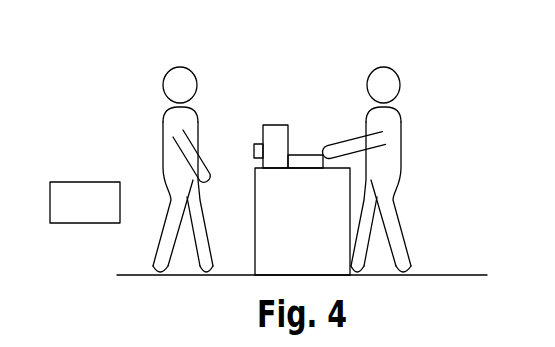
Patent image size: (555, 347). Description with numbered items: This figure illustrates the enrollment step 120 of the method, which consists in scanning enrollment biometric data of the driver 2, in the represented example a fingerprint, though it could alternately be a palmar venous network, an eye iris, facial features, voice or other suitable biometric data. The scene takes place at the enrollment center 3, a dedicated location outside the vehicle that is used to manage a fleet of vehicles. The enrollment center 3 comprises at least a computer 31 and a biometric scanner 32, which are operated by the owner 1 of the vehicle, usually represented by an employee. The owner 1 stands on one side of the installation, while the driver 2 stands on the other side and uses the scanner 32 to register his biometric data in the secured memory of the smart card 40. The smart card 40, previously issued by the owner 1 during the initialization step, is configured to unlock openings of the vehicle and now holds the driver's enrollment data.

The owner 1 is at (177, 58).
The driver 2 is at (386, 52).
The enrollment center 3 is at (282, 138).
The computer 31 is at (282, 133).
The biometric scanner 32 is at (310, 157).
The smart card 40 is at (254, 149).
The enrollment step 120 is at (65, 211).